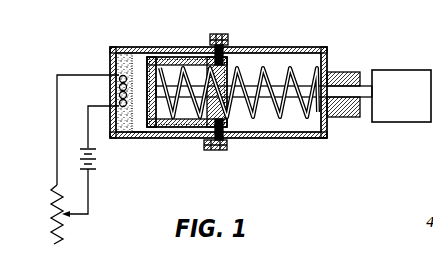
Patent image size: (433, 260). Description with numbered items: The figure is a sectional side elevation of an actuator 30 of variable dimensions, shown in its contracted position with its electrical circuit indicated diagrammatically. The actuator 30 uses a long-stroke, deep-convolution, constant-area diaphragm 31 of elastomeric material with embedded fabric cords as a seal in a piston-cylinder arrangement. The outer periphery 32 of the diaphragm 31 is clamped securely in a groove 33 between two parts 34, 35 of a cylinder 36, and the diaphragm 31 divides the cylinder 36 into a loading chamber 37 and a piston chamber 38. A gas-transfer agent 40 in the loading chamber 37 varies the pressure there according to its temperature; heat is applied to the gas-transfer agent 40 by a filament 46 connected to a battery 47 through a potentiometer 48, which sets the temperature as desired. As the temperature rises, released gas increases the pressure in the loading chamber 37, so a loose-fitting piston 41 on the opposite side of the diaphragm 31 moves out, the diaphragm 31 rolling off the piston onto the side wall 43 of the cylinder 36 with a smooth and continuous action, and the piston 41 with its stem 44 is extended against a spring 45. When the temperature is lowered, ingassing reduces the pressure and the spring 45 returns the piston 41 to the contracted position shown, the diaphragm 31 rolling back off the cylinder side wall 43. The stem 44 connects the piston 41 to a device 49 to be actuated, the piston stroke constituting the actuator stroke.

The actuator 30 is at (265, 44).
The diaphragm 31 is at (147, 62).
The outer periphery 32 is at (226, 46).
The groove 33 is at (218, 34).
The part of cylinder 34 is at (166, 139).
The part of cylinder 35 is at (250, 134).
The cylinder 36 is at (320, 140).
The loading chamber 37 is at (143, 139).
The piston chamber 38 is at (302, 48).
The gas-transfer agent 40 is at (120, 68).
The piston 41 is at (158, 58).
The side wall of cylinder 43 is at (246, 113).
The stem 44 is at (362, 85).
The spring 45 is at (247, 60).
The filament 46 is at (120, 88).
The battery 47 is at (97, 167).
The potentiometer 48 is at (50, 206).
The device to be actuated 49 is at (403, 123).